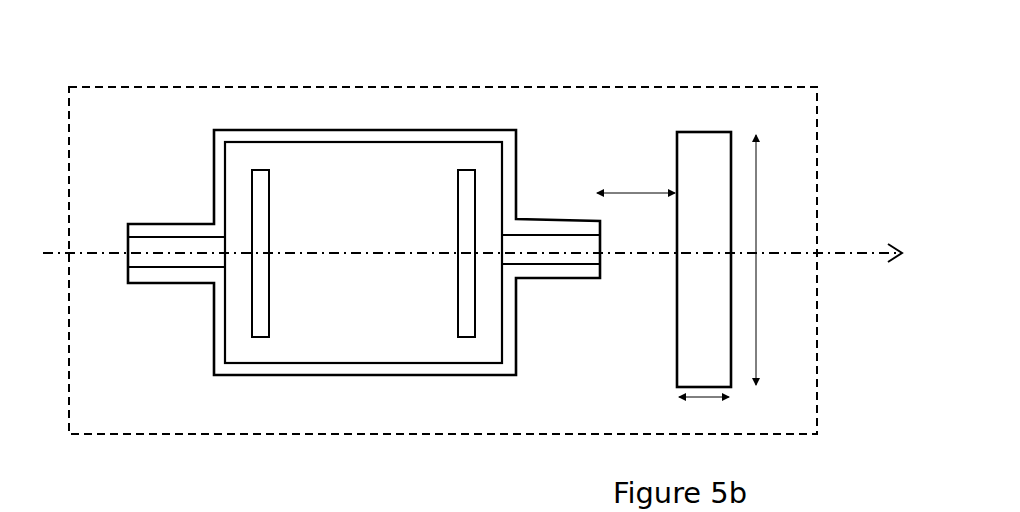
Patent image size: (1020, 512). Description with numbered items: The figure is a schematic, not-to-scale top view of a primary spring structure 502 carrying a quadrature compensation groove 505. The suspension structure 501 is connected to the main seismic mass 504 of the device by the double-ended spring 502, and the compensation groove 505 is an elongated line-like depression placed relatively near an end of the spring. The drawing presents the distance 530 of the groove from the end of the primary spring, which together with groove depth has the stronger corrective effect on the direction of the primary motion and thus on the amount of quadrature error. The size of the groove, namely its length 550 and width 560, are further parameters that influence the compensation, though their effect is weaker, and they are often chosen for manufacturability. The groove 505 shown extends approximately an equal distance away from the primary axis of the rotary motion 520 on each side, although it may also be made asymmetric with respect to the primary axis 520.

The suspension structure 501 is at (312, 163).
The primary spring structure 502 is at (240, 163).
The main seismic mass 504 is at (127, 120).
The quadrature compensation groove 505 is at (710, 155).
The primary axis of the rotary motion 520 is at (78, 252).
The distance of the groove 530 is at (636, 171).
The length 550 is at (783, 260).
The width 560 is at (706, 415).